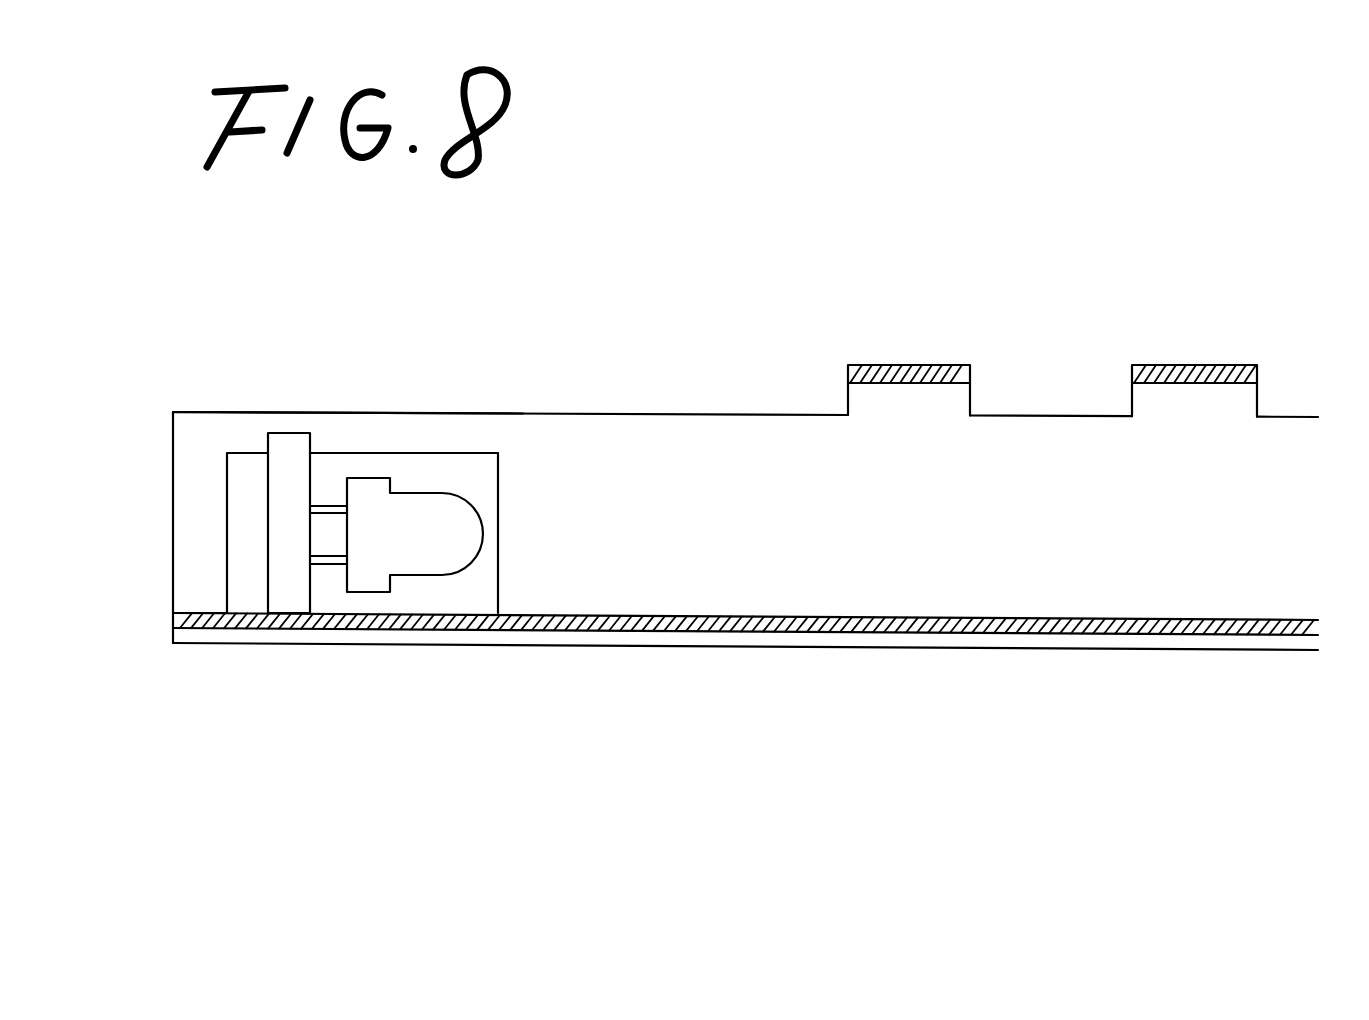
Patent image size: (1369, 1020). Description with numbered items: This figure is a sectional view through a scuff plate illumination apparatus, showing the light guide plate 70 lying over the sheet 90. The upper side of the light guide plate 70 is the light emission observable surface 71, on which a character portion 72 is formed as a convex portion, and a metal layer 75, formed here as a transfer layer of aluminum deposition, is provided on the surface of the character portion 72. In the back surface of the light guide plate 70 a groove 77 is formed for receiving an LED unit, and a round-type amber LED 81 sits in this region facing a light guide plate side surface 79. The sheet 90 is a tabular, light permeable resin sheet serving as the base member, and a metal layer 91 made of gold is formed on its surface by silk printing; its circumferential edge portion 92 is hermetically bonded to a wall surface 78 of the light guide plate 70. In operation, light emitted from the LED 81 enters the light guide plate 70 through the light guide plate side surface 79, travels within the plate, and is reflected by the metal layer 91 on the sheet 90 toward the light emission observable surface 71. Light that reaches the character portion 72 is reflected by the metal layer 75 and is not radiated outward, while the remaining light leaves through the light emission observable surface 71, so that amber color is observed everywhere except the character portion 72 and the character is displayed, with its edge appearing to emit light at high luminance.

The light guide plate 70 is at (737, 442).
The light emission observable surface 71 is at (523, 415).
The character portion 72 is at (900, 400).
The metal layer 75 is at (918, 365).
The groove 77 is at (420, 473).
The wall surface 78 is at (215, 613).
The light guide plate side surface 79 is at (497, 590).
The LED 81 is at (448, 517).
The sheet 90 is at (700, 652).
The metal layer 91 is at (692, 618).
The circumferential edge portion 92 is at (197, 610).